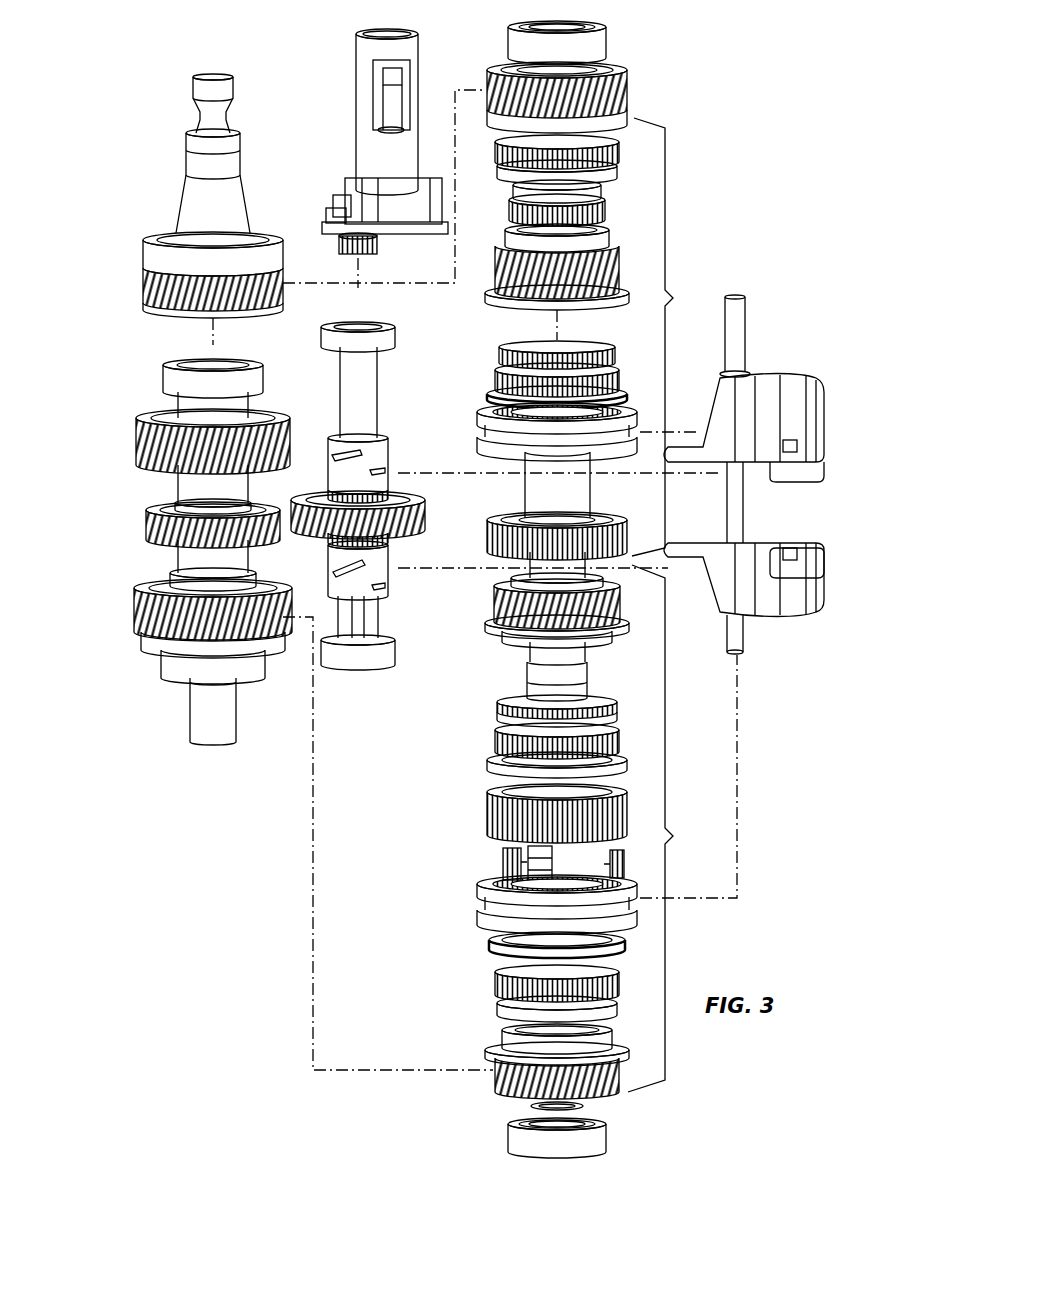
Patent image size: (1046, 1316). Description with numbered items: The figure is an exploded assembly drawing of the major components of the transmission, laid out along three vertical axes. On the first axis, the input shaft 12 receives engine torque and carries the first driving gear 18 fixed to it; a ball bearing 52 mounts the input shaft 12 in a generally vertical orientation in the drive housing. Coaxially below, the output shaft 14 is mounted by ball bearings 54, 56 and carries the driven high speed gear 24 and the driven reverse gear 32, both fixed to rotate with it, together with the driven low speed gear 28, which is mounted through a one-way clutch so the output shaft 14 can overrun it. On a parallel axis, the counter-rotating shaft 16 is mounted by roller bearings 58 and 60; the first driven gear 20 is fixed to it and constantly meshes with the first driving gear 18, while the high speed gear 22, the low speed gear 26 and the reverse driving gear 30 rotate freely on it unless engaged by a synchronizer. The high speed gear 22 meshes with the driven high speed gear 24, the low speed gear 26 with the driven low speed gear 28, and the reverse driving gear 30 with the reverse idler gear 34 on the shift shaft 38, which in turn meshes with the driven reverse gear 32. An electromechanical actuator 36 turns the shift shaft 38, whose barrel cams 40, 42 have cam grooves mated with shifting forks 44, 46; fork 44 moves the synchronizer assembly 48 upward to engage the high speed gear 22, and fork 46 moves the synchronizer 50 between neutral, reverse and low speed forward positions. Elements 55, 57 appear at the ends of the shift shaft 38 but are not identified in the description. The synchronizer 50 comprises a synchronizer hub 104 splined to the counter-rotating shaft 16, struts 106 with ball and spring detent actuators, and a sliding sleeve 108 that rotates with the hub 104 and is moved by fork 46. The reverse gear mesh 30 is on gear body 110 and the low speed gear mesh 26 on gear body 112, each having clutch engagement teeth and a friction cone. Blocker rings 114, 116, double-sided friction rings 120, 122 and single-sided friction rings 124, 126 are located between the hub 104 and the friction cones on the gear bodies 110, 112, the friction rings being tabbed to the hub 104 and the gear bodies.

The input shaft 12 is at (200, 205).
The output shaft 14 is at (200, 715).
The counter-rotating shaft 16 is at (532, 488).
The first driving gear 18 is at (150, 292).
The first driven gear 20 is at (628, 90).
The high speed gear 22 is at (500, 268).
The driven high speed gear 24 is at (140, 440).
The low speed gear 26 is at (500, 1082).
The driven low speed gear 28 is at (140, 612).
The reverse driving gear 30 is at (500, 592).
The driven reverse gear 32 is at (148, 526).
The reverse idler gear 34 is at (427, 520).
The electromechanical actuator 36 is at (362, 70).
The shift shaft 38 is at (372, 402).
The barrel cam 40 is at (384, 453).
The barrel cam 42 is at (382, 574).
The shifting fork 44 is at (795, 400).
The shifting fork 46 is at (795, 600).
The synchronizer assembly 48 is at (673, 337).
The synchronizer 50 is at (671, 828).
The ball bearing 52 is at (150, 250).
The ball bearing 54 is at (165, 378).
The bearing 55 is at (395, 334).
The ball bearing 56 is at (168, 662).
The bearing 57 is at (346, 666).
The roller bearing 58 is at (606, 46).
The roller bearing 60 is at (606, 1136).
The synchronizer hub 104 is at (488, 812).
The struts 106 is at (503, 860).
The sliding sleeve 108 is at (480, 905).
The gear body 110 is at (500, 632).
The gear body 112 is at (497, 1062).
The blocker ring 114 is at (492, 768).
The blocker ring 116 is at (492, 948).
The double-sided friction ring 120 is at (500, 986).
The double-sided friction ring 122 is at (500, 740).
The single-sided friction ring 124 is at (500, 1010).
The single-sided friction ring 126 is at (505, 708).